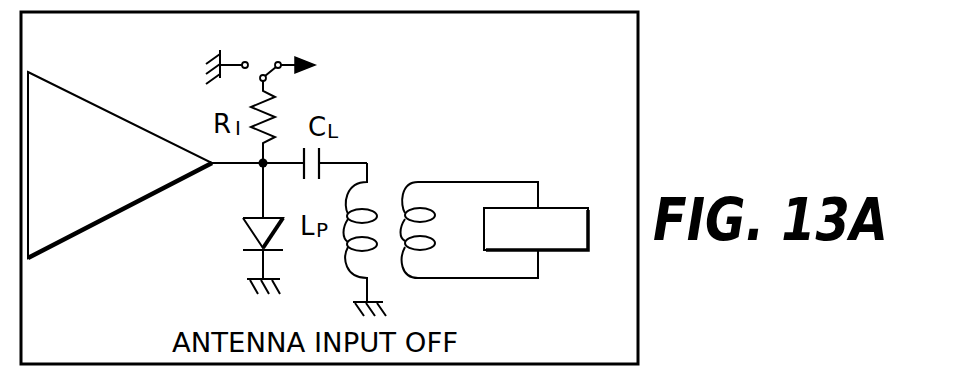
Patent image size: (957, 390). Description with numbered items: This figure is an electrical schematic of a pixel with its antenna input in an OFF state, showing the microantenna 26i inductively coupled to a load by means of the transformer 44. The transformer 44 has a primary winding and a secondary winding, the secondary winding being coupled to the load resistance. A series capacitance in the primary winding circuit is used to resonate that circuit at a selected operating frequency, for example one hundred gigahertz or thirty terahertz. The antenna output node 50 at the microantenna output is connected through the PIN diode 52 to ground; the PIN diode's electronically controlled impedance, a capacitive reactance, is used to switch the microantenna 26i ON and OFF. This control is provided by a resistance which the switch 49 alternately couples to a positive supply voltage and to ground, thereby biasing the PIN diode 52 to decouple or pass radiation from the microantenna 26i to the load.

The microantenna 26i is at (115, 113).
The transformer 44 is at (403, 166).
The switch 49 is at (267, 70).
The antenna output node 50 is at (258, 168).
The PIN diode 52 is at (245, 223).